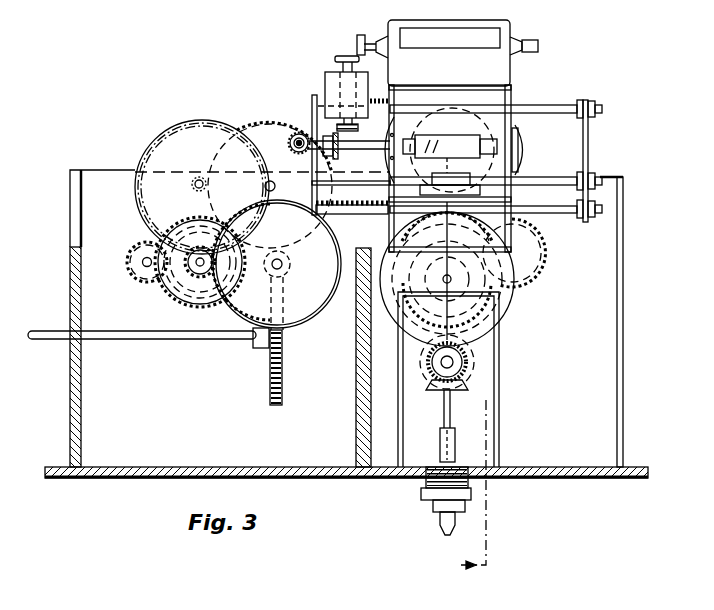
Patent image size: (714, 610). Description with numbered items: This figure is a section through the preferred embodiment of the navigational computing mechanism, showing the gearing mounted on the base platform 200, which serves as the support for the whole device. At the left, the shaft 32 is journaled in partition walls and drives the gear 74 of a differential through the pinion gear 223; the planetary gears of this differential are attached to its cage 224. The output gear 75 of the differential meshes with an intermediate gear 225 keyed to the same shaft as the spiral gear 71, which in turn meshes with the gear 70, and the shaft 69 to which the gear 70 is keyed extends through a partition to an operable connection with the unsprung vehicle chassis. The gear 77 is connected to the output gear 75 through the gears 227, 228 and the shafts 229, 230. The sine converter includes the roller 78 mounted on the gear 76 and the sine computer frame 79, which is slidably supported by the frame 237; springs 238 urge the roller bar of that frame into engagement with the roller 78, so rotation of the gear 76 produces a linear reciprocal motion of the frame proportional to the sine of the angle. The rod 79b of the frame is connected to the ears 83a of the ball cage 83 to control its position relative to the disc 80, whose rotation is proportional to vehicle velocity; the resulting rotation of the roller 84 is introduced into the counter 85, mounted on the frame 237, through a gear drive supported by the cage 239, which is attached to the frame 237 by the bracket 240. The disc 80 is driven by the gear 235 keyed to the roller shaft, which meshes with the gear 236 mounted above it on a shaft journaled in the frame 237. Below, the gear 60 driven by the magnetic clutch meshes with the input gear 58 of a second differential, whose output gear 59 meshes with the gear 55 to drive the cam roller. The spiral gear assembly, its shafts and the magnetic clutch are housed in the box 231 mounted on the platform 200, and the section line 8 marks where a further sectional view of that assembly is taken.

The bracket 240 is at (386, 40).
The cage 239 is at (334, 71).
The springs 238 is at (324, 76).
The counter 85 is at (512, 30).
The ball cage 83 is at (420, 132).
The roller 84 is at (455, 130).
The disc 80 is at (498, 108).
The frame and bar assembly 79 is at (546, 107).
The gear 236 is at (522, 152).
The rod 79b is at (560, 178).
The gear 77 is at (176, 120).
The gear 76 is at (262, 124).
The roller 78 is at (298, 134).
The gear 228 is at (150, 156).
The shaft 229 is at (196, 185).
The shaft 230 is at (205, 256).
The shaft 32 is at (145, 260).
The pinion gear 223 is at (146, 277).
The cage 224 is at (184, 304).
The gear 227 is at (198, 279).
The gear 74 is at (238, 300).
The gear 75 is at (232, 287).
The spiral gear 71 is at (285, 266).
The intermediate gear 225 is at (305, 328).
The gear 70 is at (284, 370).
The shaft 69 is at (182, 340).
The base platform 200 is at (328, 479).
The section line 8 is at (463, 488).
The box 231 is at (498, 422).
The gear 60 is at (470, 360).
The input gear 58 is at (497, 328).
The gear 235 is at (512, 298).
The gear 55 is at (535, 262).
The frame 237 is at (515, 240).
The output gear 59 is at (425, 273).
The ears 83a is at (447, 200).